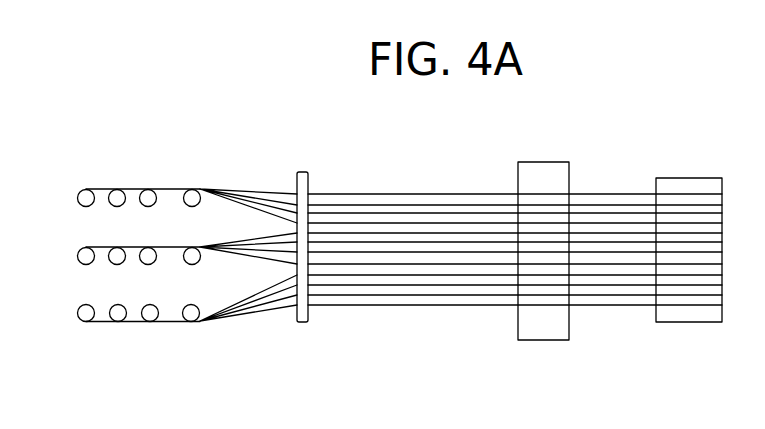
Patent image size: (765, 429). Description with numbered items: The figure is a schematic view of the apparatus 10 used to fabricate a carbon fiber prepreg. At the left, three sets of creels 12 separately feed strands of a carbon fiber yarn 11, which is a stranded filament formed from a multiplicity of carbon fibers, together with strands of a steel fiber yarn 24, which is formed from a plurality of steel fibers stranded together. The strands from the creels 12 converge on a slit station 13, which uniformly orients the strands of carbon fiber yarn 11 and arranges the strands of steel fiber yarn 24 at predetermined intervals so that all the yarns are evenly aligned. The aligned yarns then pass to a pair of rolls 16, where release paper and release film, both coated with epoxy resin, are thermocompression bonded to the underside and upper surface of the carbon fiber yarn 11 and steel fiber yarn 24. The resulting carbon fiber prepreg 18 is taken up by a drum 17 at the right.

The apparatus 10 is at (279, 146).
The carbon fiber yarn 11 is at (148, 189).
The creels 12 is at (83, 212).
The slit station 13 is at (310, 320).
The rolls 16 is at (570, 178).
The drum 17 is at (702, 178).
The carbon fiber prepreg 18 is at (628, 193).
The steel fiber yarn 24 is at (192, 189).